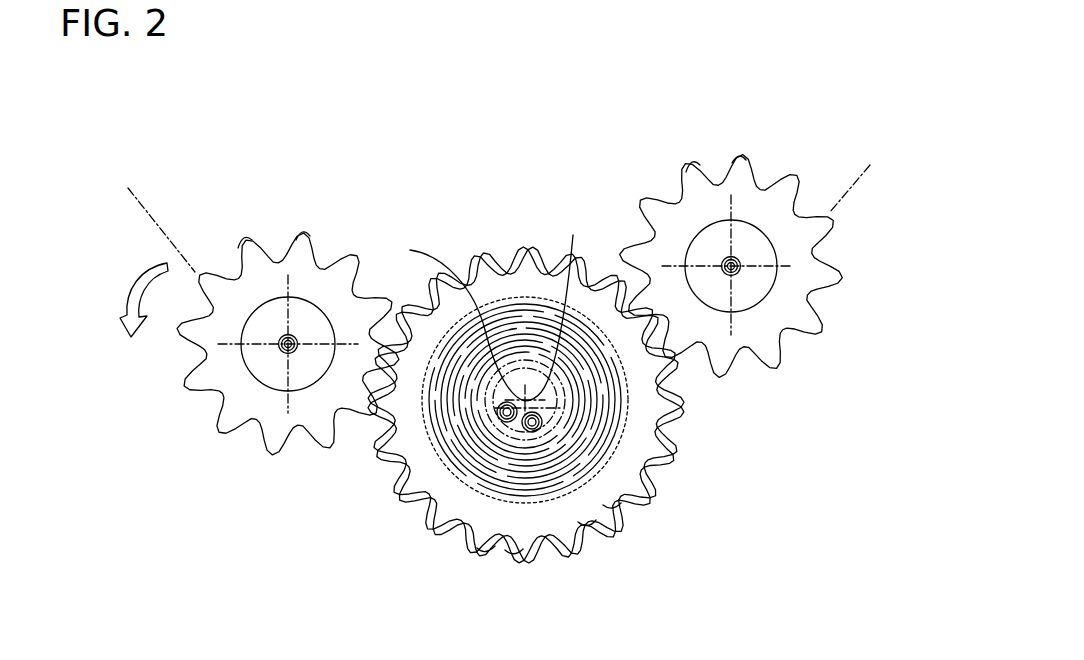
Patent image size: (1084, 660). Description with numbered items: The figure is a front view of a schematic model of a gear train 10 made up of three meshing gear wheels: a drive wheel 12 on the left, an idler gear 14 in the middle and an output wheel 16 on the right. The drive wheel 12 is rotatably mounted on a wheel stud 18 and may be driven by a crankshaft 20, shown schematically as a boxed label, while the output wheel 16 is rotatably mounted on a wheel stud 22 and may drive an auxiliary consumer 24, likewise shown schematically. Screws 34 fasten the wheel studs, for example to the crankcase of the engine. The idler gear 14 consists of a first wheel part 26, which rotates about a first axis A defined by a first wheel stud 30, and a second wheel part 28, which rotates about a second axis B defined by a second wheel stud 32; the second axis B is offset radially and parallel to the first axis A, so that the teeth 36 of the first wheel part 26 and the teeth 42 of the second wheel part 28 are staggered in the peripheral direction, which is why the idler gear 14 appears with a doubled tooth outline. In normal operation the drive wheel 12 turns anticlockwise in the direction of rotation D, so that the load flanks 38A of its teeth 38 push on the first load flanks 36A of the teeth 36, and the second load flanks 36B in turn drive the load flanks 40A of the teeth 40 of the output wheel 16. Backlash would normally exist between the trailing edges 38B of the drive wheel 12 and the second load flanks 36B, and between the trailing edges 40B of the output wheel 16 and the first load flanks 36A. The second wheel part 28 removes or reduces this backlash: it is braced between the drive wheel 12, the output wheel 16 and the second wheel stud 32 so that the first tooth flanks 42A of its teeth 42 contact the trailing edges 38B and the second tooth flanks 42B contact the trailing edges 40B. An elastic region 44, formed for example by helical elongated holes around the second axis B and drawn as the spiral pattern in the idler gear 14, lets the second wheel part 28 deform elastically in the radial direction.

The gear train 10 is at (472, 78).
The drive wheel 12 is at (217, 392).
The idler gear 14 is at (350, 460).
The output wheel 16 is at (787, 297).
The wheel stud 18 is at (258, 330).
The crankshaft 20 is at (86, 169).
The wheel stud 22 is at (763, 277).
The auxiliary consumer 24 is at (873, 149).
The first wheel part 26 is at (620, 478).
The second wheel part 28 is at (532, 425).
The first wheel stud 30 is at (560, 423).
The second wheel stud 32 is at (560, 382).
The screws 34 is at (290, 344).
The teeth 36 is at (688, 394).
The first load flanks 36A is at (487, 560).
The second load flanks 36B is at (514, 560).
The teeth 38 is at (159, 342).
The load flanks 38A is at (287, 238).
The trailing edges 38B is at (263, 240).
The teeth 40 is at (801, 356).
The load flanks 40A is at (700, 162).
The trailing edges 40B is at (727, 153).
The teeth 42 is at (475, 245).
The first tooth flanks 42A is at (613, 517).
The second tooth flanks 42B is at (591, 532).
The elastic region 44 is at (512, 317).
The first axis A is at (563, 311).
The second axis B is at (453, 317).
The direction of rotation D is at (137, 280).